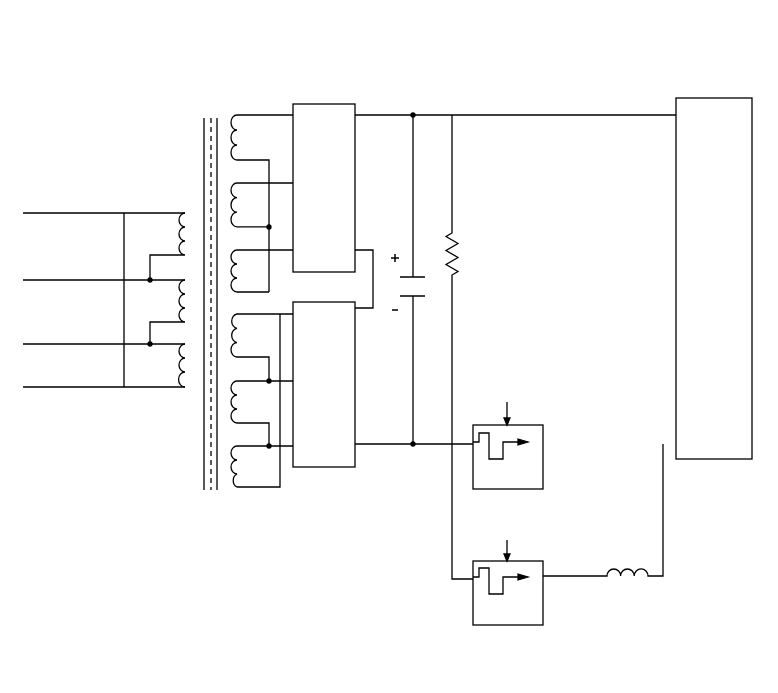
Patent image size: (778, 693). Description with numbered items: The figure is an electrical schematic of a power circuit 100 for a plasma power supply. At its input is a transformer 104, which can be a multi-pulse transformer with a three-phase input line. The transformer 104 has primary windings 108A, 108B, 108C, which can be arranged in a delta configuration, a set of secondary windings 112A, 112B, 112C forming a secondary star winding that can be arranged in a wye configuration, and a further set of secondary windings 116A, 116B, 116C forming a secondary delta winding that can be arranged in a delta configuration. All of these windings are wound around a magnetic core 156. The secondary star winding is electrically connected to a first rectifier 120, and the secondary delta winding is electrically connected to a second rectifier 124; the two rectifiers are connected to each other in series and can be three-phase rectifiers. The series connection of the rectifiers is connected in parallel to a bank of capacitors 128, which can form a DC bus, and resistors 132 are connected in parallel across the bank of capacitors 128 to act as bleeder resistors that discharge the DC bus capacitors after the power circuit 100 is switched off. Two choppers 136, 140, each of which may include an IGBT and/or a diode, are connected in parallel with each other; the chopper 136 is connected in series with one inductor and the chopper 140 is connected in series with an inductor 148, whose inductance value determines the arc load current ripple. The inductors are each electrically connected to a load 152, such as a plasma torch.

The power circuit 100 is at (596, 68).
The transformer 104 is at (188, 507).
The primary winding 108A is at (180, 232).
The primary winding 108B is at (180, 298).
The primary winding 108C is at (180, 362).
The secondary winding 112A is at (240, 140).
The secondary winding 112B is at (238, 183).
The secondary winding 112C is at (238, 270).
The secondary winding 116A is at (238, 330).
The secondary winding 116B is at (238, 425).
The secondary winding 116C is at (238, 466).
The first rectifier 120 is at (357, 176).
The second rectifier 124 is at (357, 384).
The bank of capacitors 128 is at (408, 272).
The resistors 132 is at (458, 264).
The chopper 136 is at (518, 425).
The chopper 140 is at (440, 350).
The inductor 148 is at (620, 574).
The load 152 is at (712, 98).
The magnetic core 156 is at (211, 118).